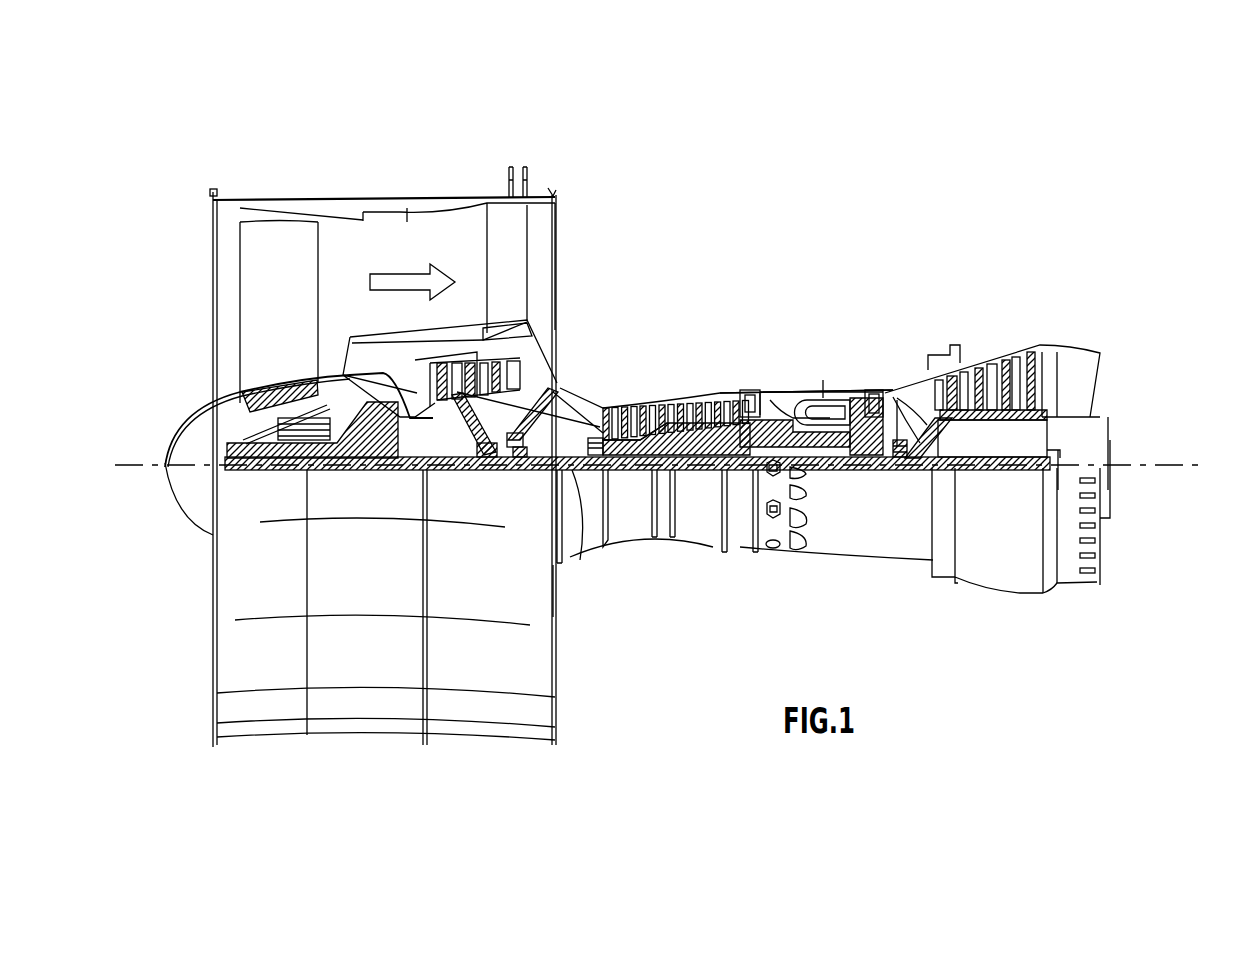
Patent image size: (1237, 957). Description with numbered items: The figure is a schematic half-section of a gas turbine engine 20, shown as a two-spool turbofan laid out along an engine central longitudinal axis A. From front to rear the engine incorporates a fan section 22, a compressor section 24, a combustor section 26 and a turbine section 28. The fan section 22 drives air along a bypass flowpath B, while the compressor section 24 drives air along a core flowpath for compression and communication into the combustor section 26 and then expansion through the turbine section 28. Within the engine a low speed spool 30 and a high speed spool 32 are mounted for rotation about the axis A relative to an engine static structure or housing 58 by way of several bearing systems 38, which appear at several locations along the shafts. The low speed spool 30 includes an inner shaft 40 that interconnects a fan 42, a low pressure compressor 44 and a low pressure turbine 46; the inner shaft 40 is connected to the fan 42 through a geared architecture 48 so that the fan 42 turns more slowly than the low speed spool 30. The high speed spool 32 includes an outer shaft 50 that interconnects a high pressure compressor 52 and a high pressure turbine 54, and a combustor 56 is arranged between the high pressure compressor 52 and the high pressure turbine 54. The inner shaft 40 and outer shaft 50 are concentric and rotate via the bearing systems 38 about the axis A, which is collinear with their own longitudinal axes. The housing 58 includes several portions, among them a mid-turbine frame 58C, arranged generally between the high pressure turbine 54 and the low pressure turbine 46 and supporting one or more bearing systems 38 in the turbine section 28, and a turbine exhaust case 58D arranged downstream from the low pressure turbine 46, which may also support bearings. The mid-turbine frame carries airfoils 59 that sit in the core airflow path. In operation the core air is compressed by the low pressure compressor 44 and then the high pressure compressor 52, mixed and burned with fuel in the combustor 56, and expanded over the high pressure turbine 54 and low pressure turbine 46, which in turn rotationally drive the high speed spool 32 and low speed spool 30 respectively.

The gas turbine engine 20 is at (818, 246).
The fan section 22 is at (318, 190).
The compressor section 24 is at (604, 376).
The combustor section 26 is at (811, 364).
The turbine section 28 is at (1007, 384).
The low speed spool 30 is at (703, 476).
The high speed spool 32 is at (745, 412).
The bearing systems 38 is at (512, 452).
The inner shaft 40 is at (582, 555).
The fan 42 is at (293, 322).
The low pressure compressor 44 is at (493, 373).
The low pressure turbine 46 is at (995, 365).
The geared architecture 48 is at (387, 452).
The outer shaft 50 is at (820, 467).
The high pressure compressor 52 is at (677, 440).
The high pressure turbine 54 is at (870, 392).
The combustor 56 is at (815, 410).
The engine static structure or housing 58 is at (740, 551).
The mid-turbine frame 58C is at (913, 376).
The turbine exhaust case 58D is at (1073, 370).
The airfoils 59 is at (938, 436).
The engine central longitudinal axis A is at (1188, 465).
The bypass flowpath B is at (405, 268).